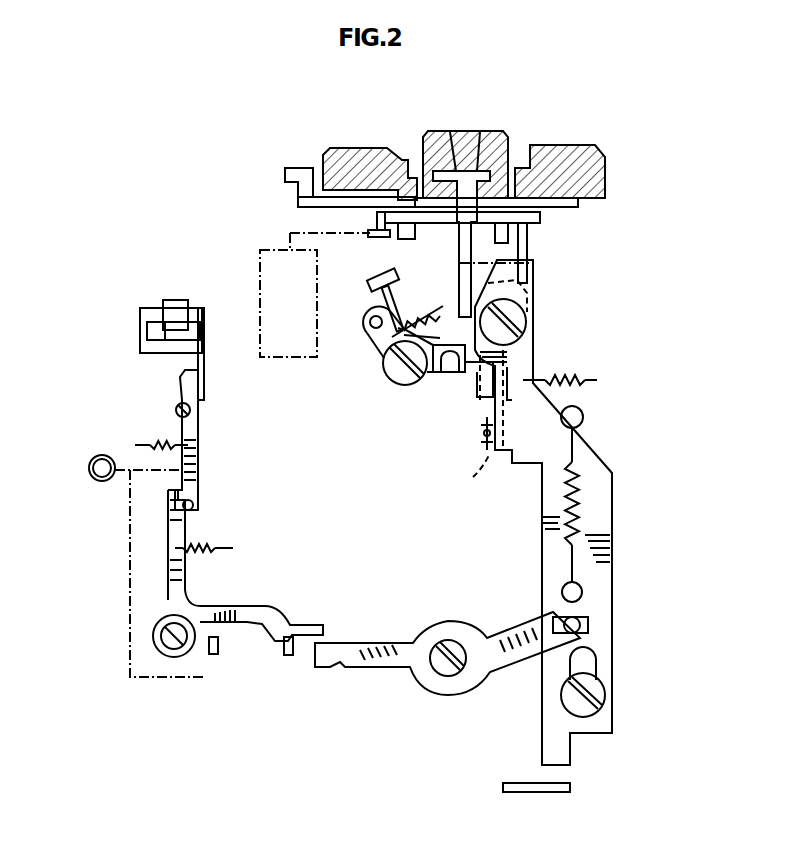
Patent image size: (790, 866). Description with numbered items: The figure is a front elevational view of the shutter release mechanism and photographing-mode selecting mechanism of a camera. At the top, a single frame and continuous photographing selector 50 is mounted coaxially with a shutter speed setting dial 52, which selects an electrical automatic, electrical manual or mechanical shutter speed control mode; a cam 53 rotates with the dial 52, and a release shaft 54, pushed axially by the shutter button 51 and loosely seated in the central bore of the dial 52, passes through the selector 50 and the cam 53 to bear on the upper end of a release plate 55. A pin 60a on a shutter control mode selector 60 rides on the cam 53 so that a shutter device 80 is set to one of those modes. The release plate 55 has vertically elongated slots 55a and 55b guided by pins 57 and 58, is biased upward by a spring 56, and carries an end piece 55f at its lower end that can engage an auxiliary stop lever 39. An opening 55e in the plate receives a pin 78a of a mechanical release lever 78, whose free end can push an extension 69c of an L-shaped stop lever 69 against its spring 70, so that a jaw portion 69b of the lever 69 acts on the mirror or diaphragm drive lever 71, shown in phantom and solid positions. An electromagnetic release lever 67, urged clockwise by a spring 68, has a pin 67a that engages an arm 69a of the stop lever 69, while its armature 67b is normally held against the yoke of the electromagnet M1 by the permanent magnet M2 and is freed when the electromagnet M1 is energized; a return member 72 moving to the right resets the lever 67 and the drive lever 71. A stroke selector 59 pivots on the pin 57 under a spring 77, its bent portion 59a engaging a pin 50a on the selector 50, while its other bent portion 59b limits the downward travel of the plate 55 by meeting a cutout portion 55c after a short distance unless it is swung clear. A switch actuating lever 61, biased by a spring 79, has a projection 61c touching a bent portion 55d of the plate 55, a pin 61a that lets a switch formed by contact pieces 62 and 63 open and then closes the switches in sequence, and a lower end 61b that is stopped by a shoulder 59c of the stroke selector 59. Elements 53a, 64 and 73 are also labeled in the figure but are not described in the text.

The auxiliary stop lever 39 is at (540, 788).
The single frame photographing and continuous photographing selector 50 is at (290, 172).
The pin 50a is at (527, 240).
The shutter button 51 is at (439, 131).
The shutter speed setting dial 52 is at (347, 160).
The cam 53 is at (540, 220).
The pin 53a is at (430, 248).
The release shaft 54 is at (440, 145).
The release plate 55 is at (588, 567).
The elongated slot 55a is at (518, 322).
The elongated slot 55b is at (593, 682).
The cutout portion 55c is at (520, 465).
The bent portion 55d is at (447, 383).
The opening 55e is at (588, 623).
The end piece 55f is at (547, 753).
The spring 56 is at (580, 483).
The pin 57 is at (515, 340).
The pin 58 is at (600, 698).
The stroke selector 59 is at (537, 363).
The bent portion 59a is at (530, 286).
The bent portion 59b is at (490, 455).
The shoulder 59c is at (497, 400).
The shutter control mode selector 60 is at (385, 234).
The pin 60a is at (380, 216).
The switch actuating lever 61 is at (377, 383).
The pin 61a is at (385, 345).
The lower end 61b is at (497, 390).
The projection 61c is at (475, 340).
The contact piece 62 is at (378, 292).
The contact piece 63 is at (370, 320).
The pin head 64 is at (390, 280).
The electromagnetic release lever 67 is at (182, 430).
The pin 67a is at (192, 500).
The armature 67b is at (230, 357).
The spring 68 is at (160, 437).
The L-shaped stop lever 69 is at (173, 587).
The arm 69a is at (173, 513).
The jaw portion 69b is at (280, 638).
The extension 69c is at (315, 627).
The spring 70 is at (203, 550).
The reflecting mirror or diaphragm drive lever 71 is at (287, 657).
The return member 72 is at (88, 472).
The bracket 73 is at (177, 347).
The spring 77 is at (577, 381).
The mechanical release lever 78 is at (403, 667).
The pin 78a is at (543, 618).
The spring 79 is at (403, 322).
The shutter device 80 is at (293, 337).
The electromagnet M1 is at (170, 300).
The permanent magnet M2 is at (145, 330).